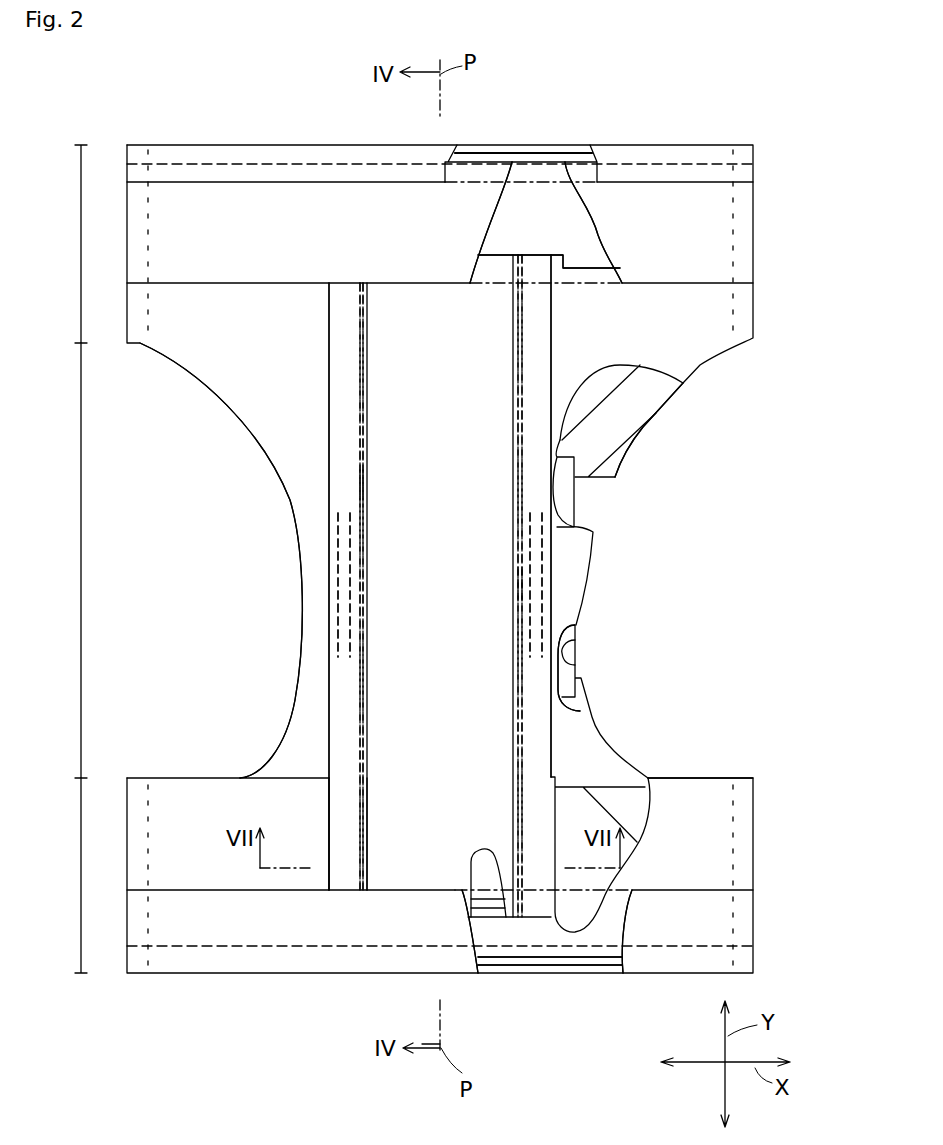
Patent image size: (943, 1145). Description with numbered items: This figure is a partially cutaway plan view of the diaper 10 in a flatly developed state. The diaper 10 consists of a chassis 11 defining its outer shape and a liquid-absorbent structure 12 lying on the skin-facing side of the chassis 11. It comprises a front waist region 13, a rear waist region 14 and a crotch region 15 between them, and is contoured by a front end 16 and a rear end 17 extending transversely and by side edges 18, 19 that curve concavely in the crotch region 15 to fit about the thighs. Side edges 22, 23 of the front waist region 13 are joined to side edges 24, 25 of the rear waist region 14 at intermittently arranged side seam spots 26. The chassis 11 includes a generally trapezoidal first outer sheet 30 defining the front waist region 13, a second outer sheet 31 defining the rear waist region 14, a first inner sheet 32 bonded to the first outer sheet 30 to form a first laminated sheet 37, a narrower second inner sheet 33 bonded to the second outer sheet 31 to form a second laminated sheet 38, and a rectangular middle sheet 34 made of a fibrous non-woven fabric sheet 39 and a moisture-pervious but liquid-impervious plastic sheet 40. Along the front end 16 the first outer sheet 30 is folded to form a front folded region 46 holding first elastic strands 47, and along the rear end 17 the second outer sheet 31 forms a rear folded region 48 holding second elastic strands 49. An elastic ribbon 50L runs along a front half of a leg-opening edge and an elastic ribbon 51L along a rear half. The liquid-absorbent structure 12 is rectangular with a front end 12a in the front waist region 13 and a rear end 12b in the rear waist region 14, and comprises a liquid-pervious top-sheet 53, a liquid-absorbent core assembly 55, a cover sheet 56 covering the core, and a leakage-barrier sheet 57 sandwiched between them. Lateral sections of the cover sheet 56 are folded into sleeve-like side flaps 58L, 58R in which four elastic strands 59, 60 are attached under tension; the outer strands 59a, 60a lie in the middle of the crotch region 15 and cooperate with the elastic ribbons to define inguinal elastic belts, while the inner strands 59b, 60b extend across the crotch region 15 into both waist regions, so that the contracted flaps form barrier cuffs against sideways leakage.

The diaper 10 is at (736, 106).
The chassis 11 is at (289, 137).
The liquid-absorbent structure 12 is at (528, 248).
The front end 12a is at (392, 806).
The rear end 12b is at (500, 311).
The front waist region 13 is at (78, 850).
The rear waist region 14 is at (78, 240).
The crotch region 15 is at (78, 540).
The front end 16 is at (270, 973).
The rear end 17 is at (478, 150).
The side edge 18 is at (268, 488).
The side edge 19 is at (627, 458).
The side edge of front waist region 22 is at (165, 833).
The side edge of front waist region 23 is at (712, 832).
The side edge of rear waist region 24 is at (158, 248).
The side edge of rear waist region 25 is at (712, 248).
The side seam spots 26 is at (150, 227).
The first outer sheet 30 is at (545, 935).
The second outer sheet 31 is at (548, 192).
The first inner sheet 32 is at (594, 930).
The second inner sheet 33 is at (620, 200).
The middle sheet 34 is at (656, 691).
The first laminated sheet 37 is at (547, 1016).
The second laminated sheet 38 is at (637, 90).
The fibrous non-woven fabric sheet 39 is at (568, 653).
The plastic sheet 40 is at (568, 632).
The front folded region 46 is at (215, 932).
The first elastic strands 47 is at (532, 963).
The rear folded region 48 is at (236, 150).
The second elastic strands 49 is at (521, 160).
The elastic ribbon 50L is at (625, 793).
The elastic ribbon 51L is at (628, 415).
The top-sheet 53 is at (432, 300).
The liquid-absorbent core assembly 55 is at (480, 902).
The cover sheet 56 is at (350, 347).
The leakage-barrier sheet 57 is at (479, 863).
The side flap 58L is at (538, 342).
The side flap 58R is at (350, 383).
The elastic strands 59 is at (456, 475).
The outer elastic strand 59a is at (351, 556).
The inner elastic strand 59b is at (366, 490).
The elastic strands 60 is at (428, 573).
The outer elastic strand 60a is at (542, 651).
The inner elastic strand 60b is at (520, 590).